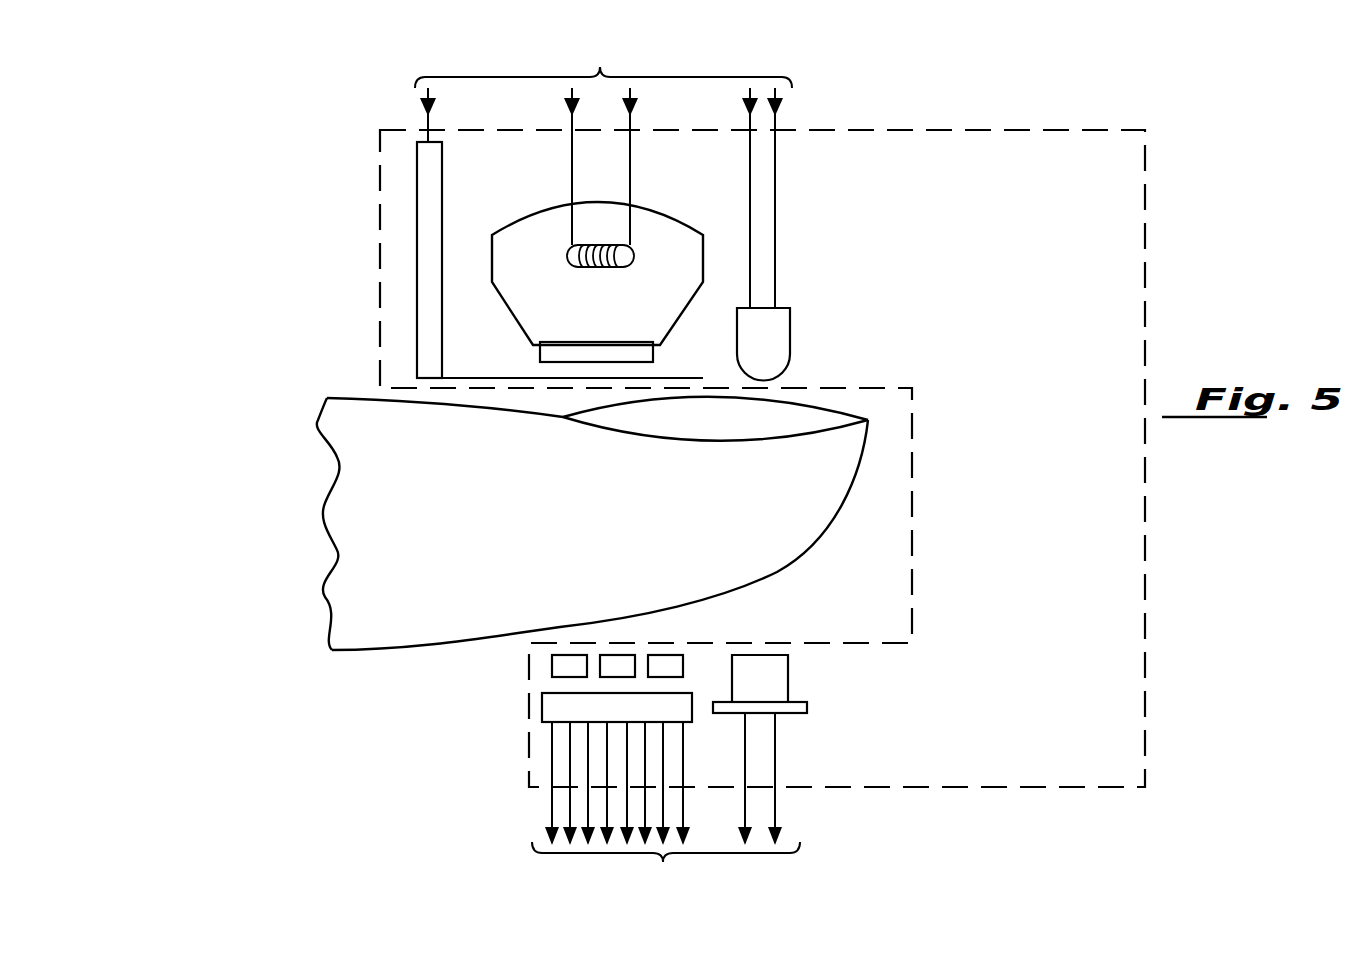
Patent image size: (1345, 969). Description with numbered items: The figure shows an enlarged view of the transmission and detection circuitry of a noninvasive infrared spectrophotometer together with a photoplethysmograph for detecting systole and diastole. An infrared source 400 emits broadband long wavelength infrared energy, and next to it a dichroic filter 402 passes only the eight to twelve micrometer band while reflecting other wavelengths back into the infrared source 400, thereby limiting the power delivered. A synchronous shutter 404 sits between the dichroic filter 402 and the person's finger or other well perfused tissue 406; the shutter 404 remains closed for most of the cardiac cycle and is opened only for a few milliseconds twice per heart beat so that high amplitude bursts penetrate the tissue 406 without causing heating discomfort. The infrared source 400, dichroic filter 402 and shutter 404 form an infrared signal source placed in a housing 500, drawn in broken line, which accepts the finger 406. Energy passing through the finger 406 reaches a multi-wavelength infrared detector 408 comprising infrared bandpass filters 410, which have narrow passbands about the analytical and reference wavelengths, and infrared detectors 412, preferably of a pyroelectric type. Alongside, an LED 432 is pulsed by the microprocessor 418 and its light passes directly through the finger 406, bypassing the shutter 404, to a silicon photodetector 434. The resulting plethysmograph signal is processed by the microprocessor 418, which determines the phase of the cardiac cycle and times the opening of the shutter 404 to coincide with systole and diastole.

The infrared source 400 is at (545, 215).
The dichroic filter 402 is at (583, 353).
The shutter 404 is at (427, 235).
The finger or other perfused tissue 406 is at (337, 573).
The multi-wavelength infrared detector 408 is at (518, 778).
The infrared bandpass filters 410 is at (482, 690).
The infrared detectors 412 is at (545, 712).
The microprocessor 418 is at (611, 452).
The LED 432 is at (792, 333).
The silicon photodetector 434 is at (808, 707).
The housing 500 is at (1020, 778).